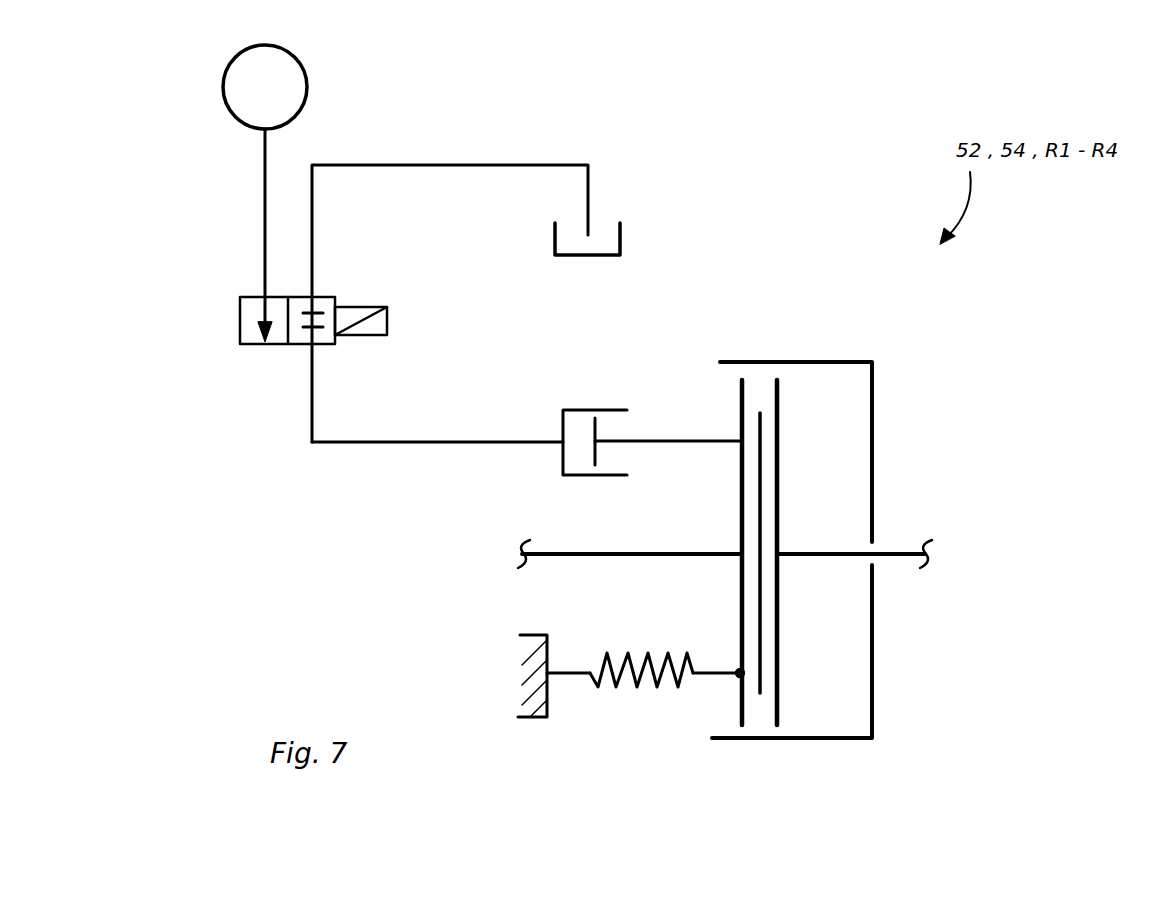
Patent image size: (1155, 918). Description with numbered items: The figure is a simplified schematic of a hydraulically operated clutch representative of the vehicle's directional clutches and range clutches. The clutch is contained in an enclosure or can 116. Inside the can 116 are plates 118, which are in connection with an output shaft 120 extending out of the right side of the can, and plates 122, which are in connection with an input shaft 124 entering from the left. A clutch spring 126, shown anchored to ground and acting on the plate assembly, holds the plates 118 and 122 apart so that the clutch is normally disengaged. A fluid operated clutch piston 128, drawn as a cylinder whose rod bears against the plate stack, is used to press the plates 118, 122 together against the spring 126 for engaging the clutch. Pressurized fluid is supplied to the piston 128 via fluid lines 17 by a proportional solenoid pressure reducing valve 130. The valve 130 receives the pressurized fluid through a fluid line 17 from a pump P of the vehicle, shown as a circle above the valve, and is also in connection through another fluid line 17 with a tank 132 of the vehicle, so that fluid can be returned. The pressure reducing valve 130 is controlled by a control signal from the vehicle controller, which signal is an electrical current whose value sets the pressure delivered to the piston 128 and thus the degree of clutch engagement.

The fluid lines 17 is at (263, 230).
The enclosure or can 116 is at (848, 360).
The plates 118 is at (778, 463).
The output shaft 120 is at (898, 548).
The plates 122 is at (738, 605).
The input shaft 124 is at (587, 553).
The clutch spring 126 is at (620, 685).
The fluid operated clutch piston 128 is at (597, 462).
The proportional solenoid pressure reducing valve 130 is at (240, 320).
The tank 132 is at (620, 245).